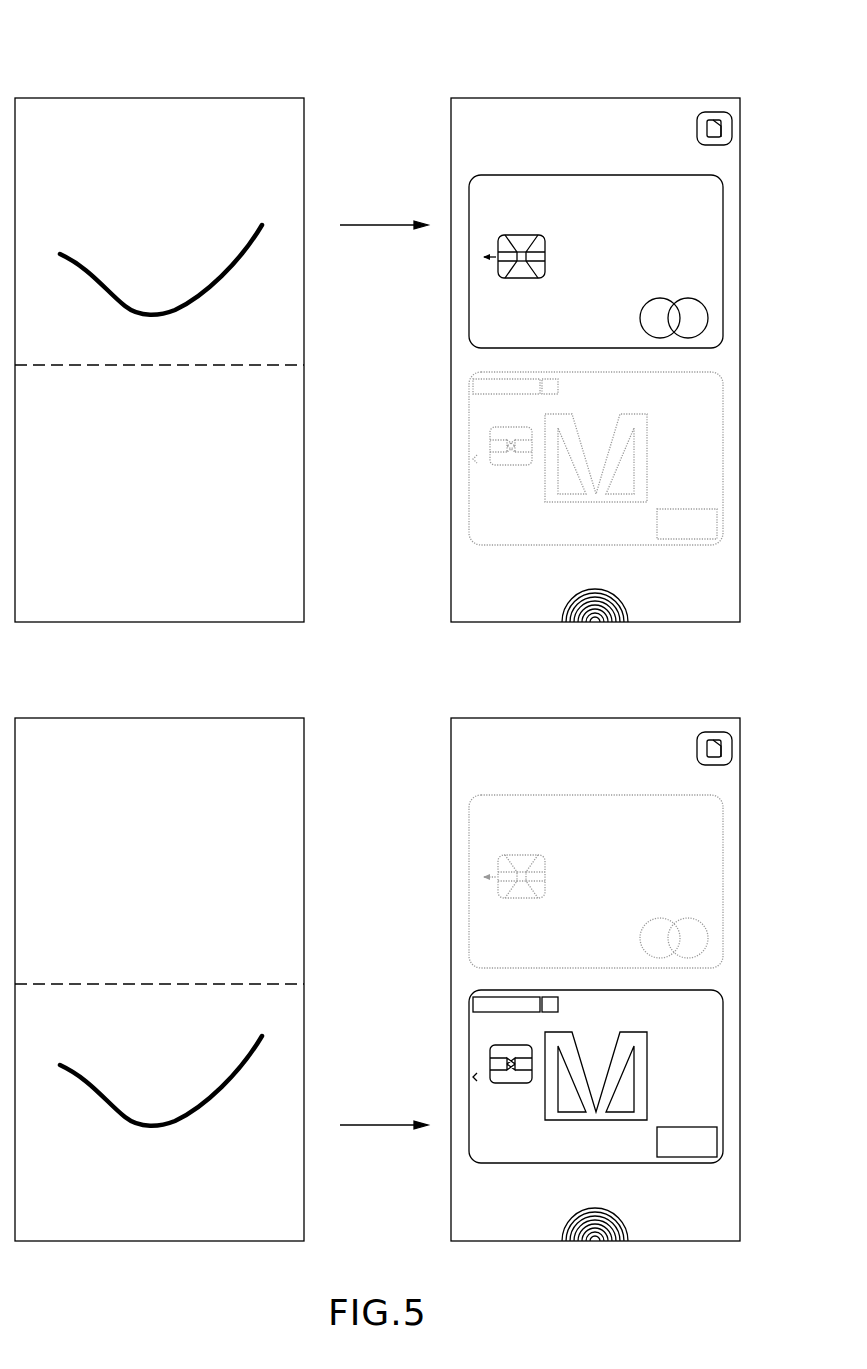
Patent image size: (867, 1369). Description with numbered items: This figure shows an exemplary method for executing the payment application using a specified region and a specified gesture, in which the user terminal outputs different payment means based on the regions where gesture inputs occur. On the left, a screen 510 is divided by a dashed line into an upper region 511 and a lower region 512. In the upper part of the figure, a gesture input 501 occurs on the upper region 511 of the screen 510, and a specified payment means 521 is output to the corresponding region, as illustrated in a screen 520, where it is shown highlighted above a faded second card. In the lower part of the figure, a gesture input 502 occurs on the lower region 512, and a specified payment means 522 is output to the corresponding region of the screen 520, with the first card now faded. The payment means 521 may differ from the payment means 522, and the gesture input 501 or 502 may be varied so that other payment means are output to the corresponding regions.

The gesture input 501 is at (228, 268).
The gesture input 502 is at (228, 1079).
The screen 510 is at (158, 98).
The upper region 511 is at (295, 355).
The lower region 512 is at (295, 610).
The screen 520 is at (596, 98).
The payment means 521 is at (723, 262).
The payment means 522 is at (723, 1075).